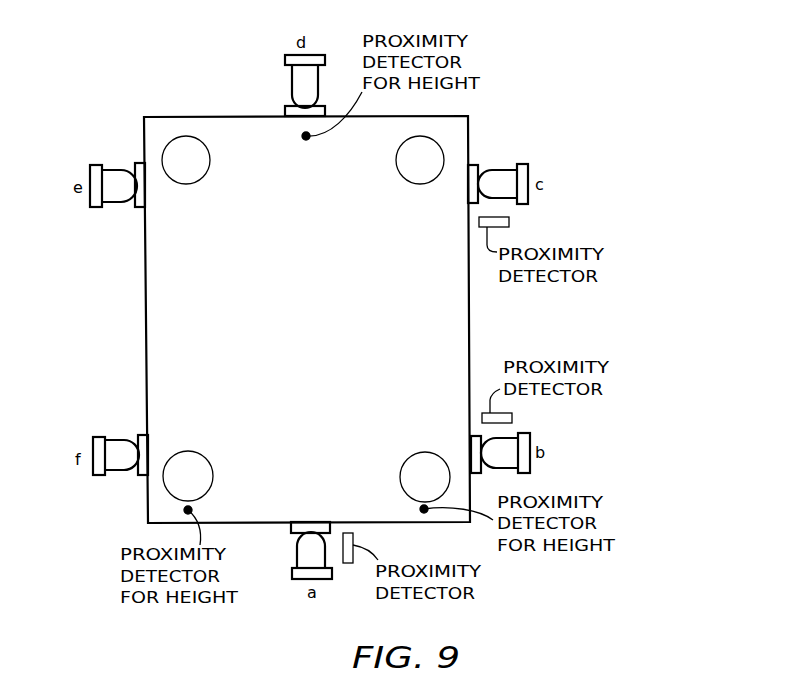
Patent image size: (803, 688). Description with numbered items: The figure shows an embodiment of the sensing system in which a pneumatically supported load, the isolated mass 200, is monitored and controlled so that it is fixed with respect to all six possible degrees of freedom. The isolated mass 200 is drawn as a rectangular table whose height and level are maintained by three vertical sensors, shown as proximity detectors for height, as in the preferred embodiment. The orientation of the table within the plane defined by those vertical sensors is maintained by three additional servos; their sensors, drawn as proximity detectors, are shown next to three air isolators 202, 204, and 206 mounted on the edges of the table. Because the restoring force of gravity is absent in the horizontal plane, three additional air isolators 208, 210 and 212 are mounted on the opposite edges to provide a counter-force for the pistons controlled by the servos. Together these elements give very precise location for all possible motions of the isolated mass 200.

The isolated mass 200 is at (324, 302).
The air isolator 202 is at (290, 580).
The air isolator 204 is at (533, 438).
The air isolator 206 is at (502, 170).
The air isolator 208 is at (292, 89).
The air isolator 210 is at (112, 168).
The air isolator 212 is at (115, 438).